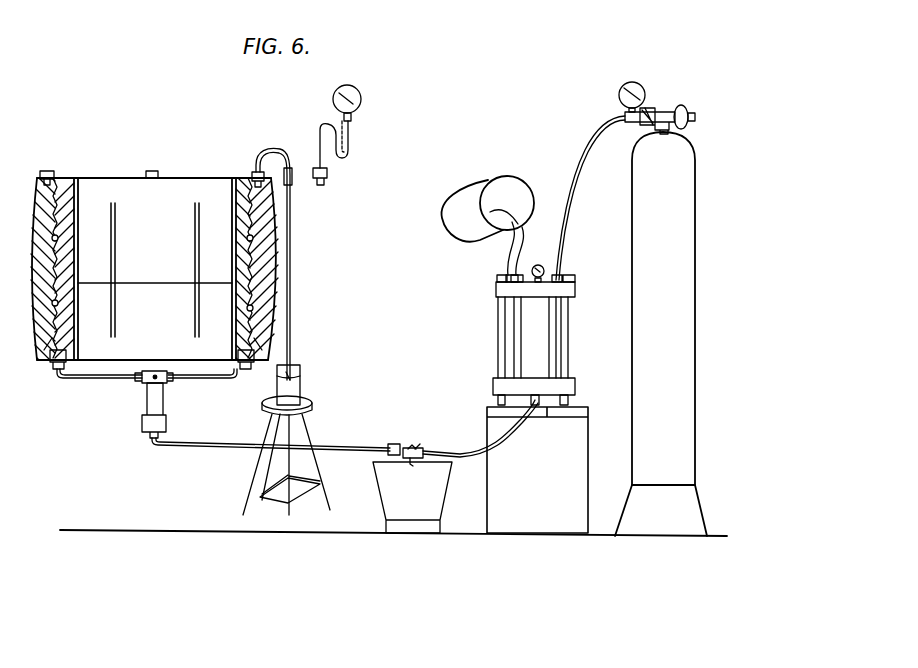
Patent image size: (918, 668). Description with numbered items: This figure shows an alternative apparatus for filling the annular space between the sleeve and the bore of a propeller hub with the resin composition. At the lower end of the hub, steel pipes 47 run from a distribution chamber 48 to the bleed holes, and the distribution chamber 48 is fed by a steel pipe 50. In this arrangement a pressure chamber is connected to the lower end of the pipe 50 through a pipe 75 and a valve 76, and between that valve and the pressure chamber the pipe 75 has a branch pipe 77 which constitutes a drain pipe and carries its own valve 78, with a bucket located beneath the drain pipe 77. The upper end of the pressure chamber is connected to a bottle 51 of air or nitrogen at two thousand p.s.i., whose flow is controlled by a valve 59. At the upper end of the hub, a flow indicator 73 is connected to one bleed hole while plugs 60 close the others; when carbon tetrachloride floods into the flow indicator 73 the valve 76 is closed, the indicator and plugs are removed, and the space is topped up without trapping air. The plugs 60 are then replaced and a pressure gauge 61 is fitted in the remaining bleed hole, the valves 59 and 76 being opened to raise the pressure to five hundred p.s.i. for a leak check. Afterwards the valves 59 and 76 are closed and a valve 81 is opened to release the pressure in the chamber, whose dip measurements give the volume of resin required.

The steel pipes 47 is at (105, 381).
The distribution chamber 48 is at (161, 406).
The steel pipe 50 is at (200, 447).
The bottle 51 is at (640, 228).
The valve 59 is at (649, 112).
The plugs 60 is at (147, 173).
The pressure gauge 61 is at (333, 97).
The flow indicator 73 is at (291, 262).
The pipe 75 is at (511, 436).
The valve 76 is at (400, 440).
The branch pipe 77 is at (413, 464).
The valve 78 is at (410, 463).
The valve 81 is at (539, 264).